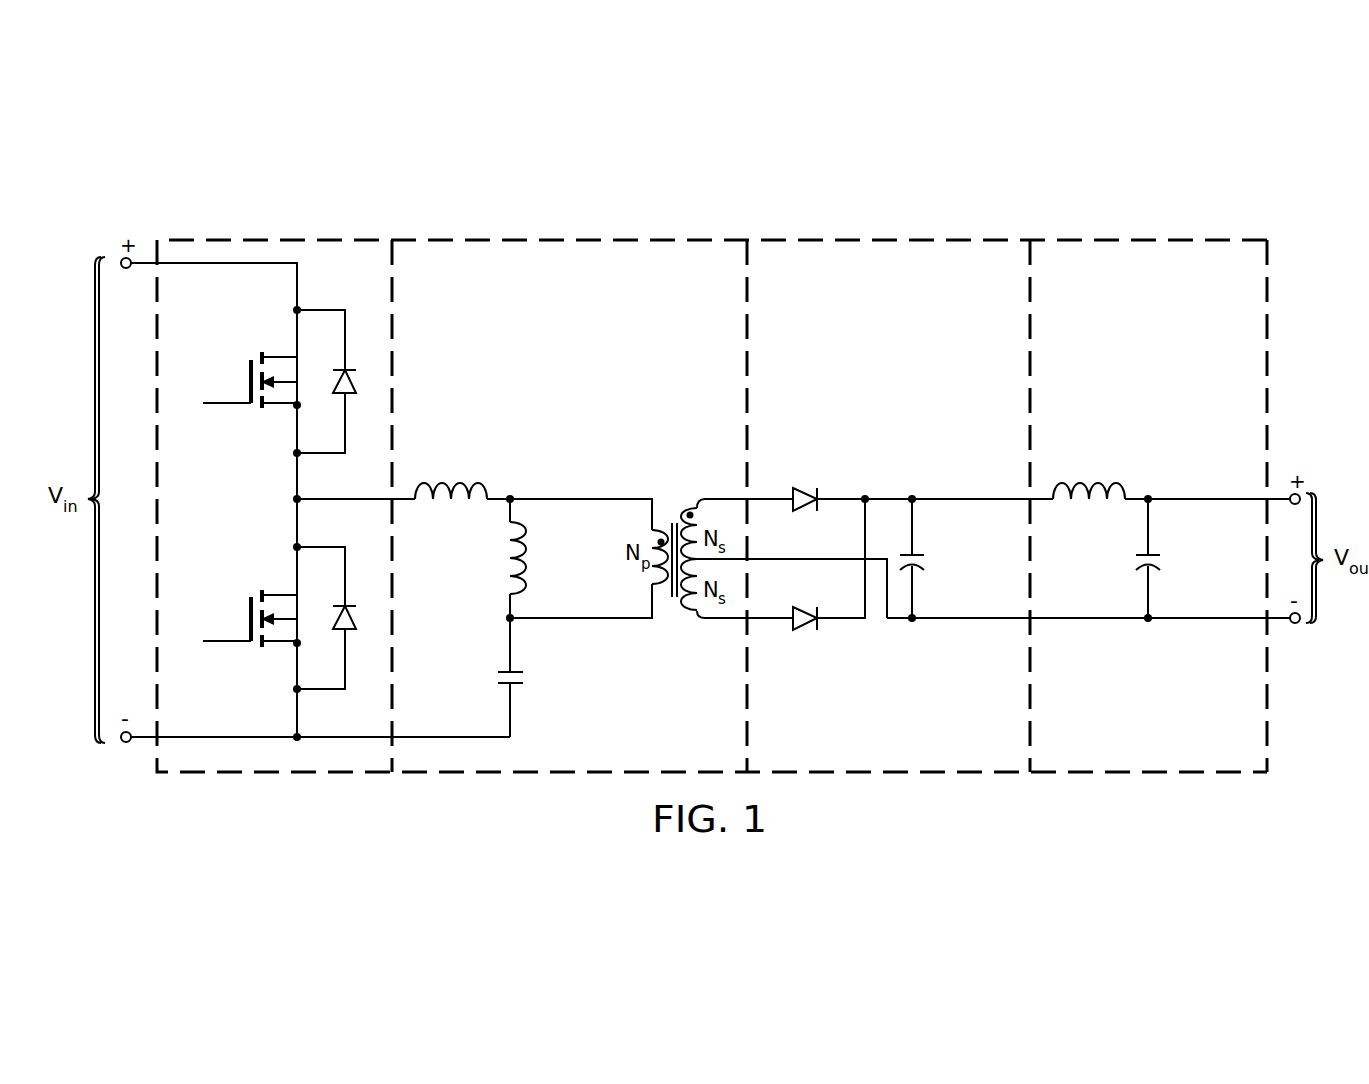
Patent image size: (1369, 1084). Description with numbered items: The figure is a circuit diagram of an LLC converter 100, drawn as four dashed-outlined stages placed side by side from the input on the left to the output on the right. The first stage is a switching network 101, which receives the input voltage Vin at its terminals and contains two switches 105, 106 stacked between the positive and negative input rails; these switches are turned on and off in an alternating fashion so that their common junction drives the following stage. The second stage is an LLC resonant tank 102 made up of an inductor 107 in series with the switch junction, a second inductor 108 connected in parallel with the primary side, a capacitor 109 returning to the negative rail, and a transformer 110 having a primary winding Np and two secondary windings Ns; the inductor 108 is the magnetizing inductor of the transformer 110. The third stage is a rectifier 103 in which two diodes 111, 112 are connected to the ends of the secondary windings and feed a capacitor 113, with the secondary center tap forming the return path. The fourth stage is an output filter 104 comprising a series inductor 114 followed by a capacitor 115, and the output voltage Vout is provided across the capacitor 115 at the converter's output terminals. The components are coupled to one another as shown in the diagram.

The LLC converter 100 is at (388, 204).
The switching network 101 is at (248, 238).
The LLC resonant tank 102 is at (528, 238).
The rectifier 103 is at (923, 238).
The output filter 104 is at (1175, 238).
The switch 105 is at (249, 368).
The switch 106 is at (249, 605).
The inductor 107 is at (445, 482).
The inductor 108 is at (528, 568).
The capacitor 109 is at (496, 678).
The transformer 110 is at (666, 626).
The diode 111 is at (806, 631).
The diode 112 is at (806, 490).
The capacitor 113 is at (927, 563).
The inductor 114 is at (1095, 482).
The capacitor 115 is at (1163, 563).